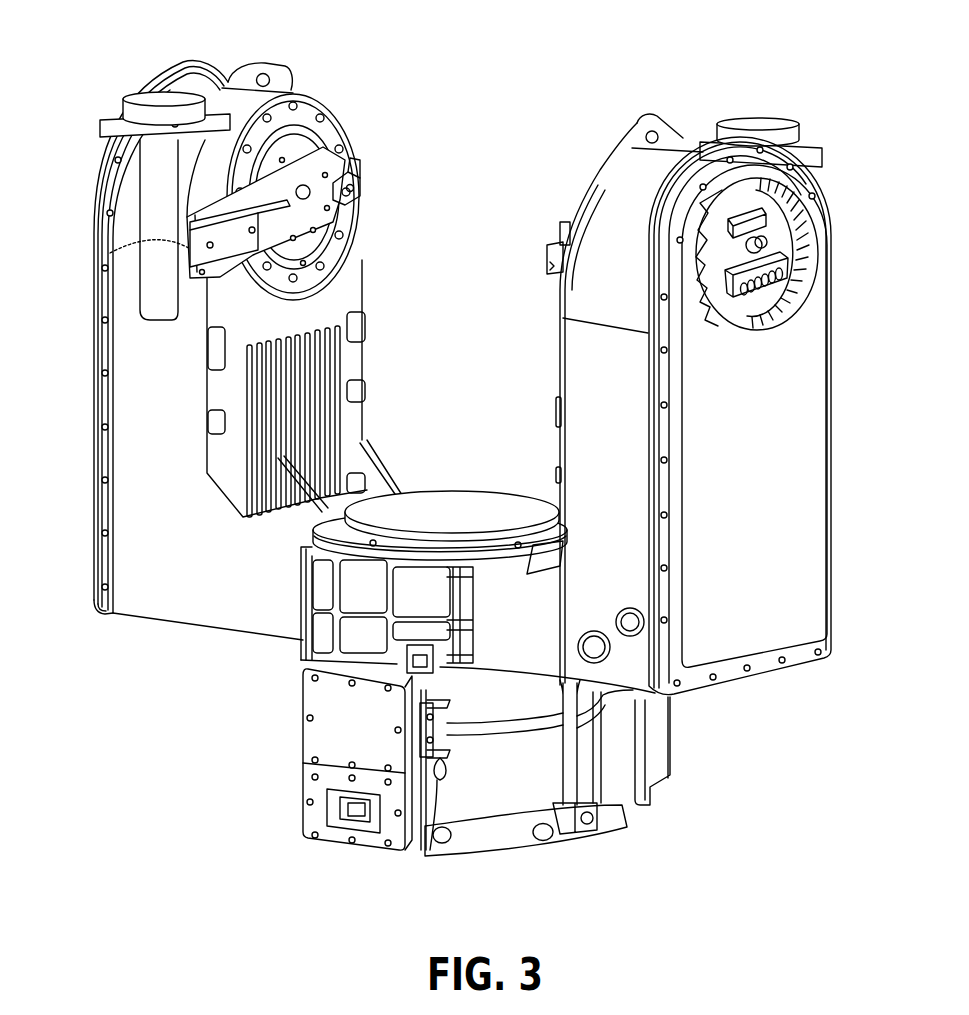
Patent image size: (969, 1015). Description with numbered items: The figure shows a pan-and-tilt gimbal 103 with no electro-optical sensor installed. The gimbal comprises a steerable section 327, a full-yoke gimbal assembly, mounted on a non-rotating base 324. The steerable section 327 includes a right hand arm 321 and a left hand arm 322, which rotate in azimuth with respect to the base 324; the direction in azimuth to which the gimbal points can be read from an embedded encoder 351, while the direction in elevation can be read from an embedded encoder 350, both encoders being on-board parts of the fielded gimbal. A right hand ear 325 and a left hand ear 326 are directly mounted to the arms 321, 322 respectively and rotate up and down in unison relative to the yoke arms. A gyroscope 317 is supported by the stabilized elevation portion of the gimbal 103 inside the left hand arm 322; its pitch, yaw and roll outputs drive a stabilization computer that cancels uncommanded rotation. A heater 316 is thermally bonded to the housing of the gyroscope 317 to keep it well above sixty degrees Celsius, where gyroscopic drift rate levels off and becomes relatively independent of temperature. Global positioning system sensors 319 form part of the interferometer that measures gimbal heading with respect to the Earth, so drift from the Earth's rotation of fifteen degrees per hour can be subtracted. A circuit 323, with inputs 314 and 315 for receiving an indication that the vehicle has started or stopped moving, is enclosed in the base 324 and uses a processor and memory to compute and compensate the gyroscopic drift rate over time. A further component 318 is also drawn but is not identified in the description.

The pan-and-tilt gimbal 103 is at (90, 453).
The steerable section 327 is at (97, 518).
The right hand arm 321 is at (340, 282).
The right hand ear 325 is at (110, 251).
The embedded encoder 350 is at (293, 147).
The global positioning system sensors 319 is at (137, 97).
The left hand arm 322 is at (561, 308).
The left hand ear 326 is at (547, 252).
The heater 316 is at (803, 307).
The gyroscope 317 is at (790, 270).
The cover plate 318 is at (767, 222).
The embedded encoder 351 is at (463, 495).
The circuit 323 is at (330, 805).
The input 315 is at (343, 820).
The input 314 is at (345, 823).
The non-rotating base 324 is at (567, 847).